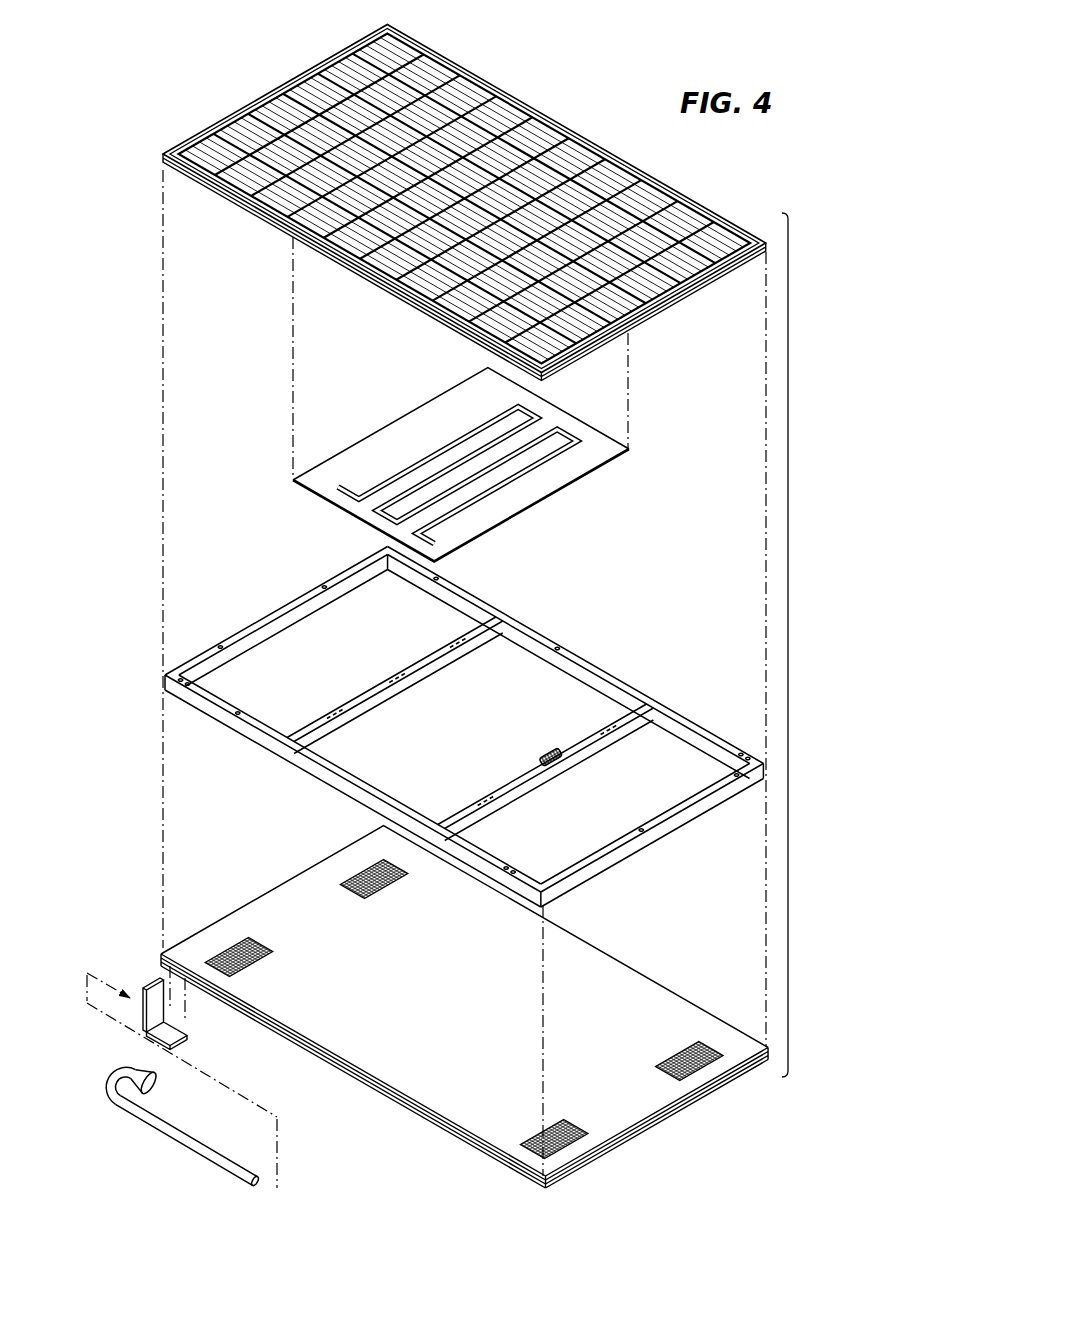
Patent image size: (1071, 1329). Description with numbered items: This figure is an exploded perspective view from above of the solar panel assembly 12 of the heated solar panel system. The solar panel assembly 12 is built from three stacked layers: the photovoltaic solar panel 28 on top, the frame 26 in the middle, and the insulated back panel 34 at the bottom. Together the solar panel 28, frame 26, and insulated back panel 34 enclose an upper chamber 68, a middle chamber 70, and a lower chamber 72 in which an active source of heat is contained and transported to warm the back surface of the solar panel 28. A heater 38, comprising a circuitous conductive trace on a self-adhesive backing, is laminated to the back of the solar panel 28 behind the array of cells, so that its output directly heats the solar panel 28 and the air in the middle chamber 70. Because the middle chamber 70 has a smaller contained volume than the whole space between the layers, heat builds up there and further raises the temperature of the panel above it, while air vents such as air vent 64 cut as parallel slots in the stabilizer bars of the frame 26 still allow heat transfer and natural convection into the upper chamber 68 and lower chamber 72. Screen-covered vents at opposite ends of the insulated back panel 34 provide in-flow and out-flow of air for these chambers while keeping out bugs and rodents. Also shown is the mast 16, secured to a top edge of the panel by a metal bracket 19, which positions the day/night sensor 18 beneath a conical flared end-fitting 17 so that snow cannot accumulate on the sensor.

The solar panel assembly 12 is at (788, 645).
The mast 16 is at (160, 1114).
The flared end-fitting 17 is at (147, 1059).
The day/night sensor 18 is at (158, 1076).
The metal bracket 19 is at (178, 1041).
The frame 26 is at (464, 728).
The solar panel 28 is at (646, 323).
The insulated back panel 34 is at (465, 1007).
The heater 38 is at (432, 638).
The air vent 64 is at (566, 773).
The upper chamber 68 is at (246, 684).
The middle chamber 70 is at (409, 786).
The lower chamber 72 is at (536, 864).